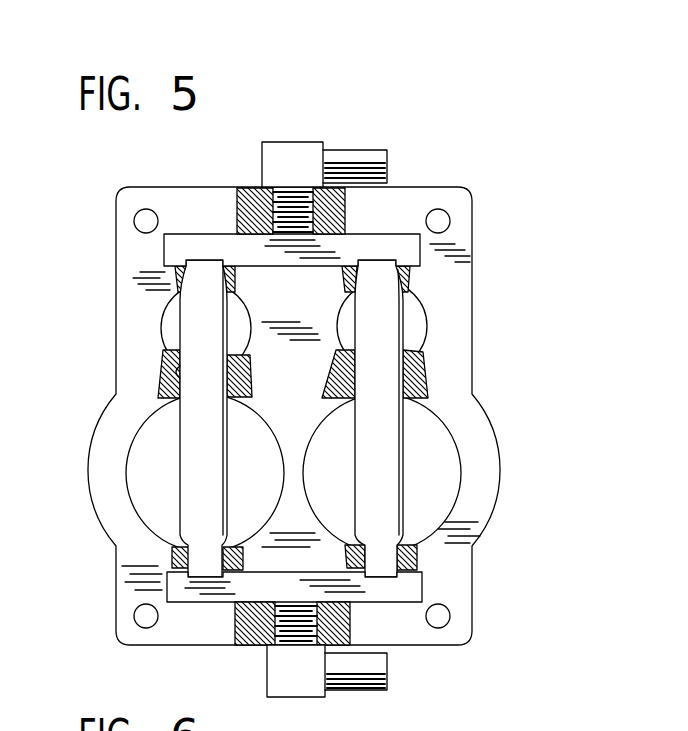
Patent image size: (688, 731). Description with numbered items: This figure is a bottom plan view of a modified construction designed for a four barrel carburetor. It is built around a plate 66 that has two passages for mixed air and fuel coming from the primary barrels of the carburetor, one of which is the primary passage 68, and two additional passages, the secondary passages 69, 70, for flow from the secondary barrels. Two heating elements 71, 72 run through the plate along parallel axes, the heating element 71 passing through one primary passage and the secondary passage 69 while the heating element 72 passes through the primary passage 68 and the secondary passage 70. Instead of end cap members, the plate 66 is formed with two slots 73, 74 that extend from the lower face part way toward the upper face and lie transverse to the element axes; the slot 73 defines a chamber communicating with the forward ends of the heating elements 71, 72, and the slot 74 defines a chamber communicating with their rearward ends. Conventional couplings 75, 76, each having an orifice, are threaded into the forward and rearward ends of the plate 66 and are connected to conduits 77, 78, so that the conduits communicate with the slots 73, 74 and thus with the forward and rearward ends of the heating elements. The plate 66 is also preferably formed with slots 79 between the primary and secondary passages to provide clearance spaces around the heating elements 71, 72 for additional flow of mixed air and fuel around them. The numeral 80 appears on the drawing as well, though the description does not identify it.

The plate 66 is at (453, 347).
The primary passage 68 is at (410, 313).
The secondary passage 69 is at (146, 508).
The secondary passage 70 is at (449, 488).
The heating element 71 is at (190, 462).
The heating element 72 is at (383, 452).
The slot 73 is at (336, 240).
The slot 74 is at (400, 590).
The coupling 75 is at (300, 143).
The coupling 76 is at (300, 697).
The conduit 77 is at (358, 152).
The conduit 78 is at (372, 695).
The slots 79 is at (183, 363).
The right seal rings 80 is at (420, 370).